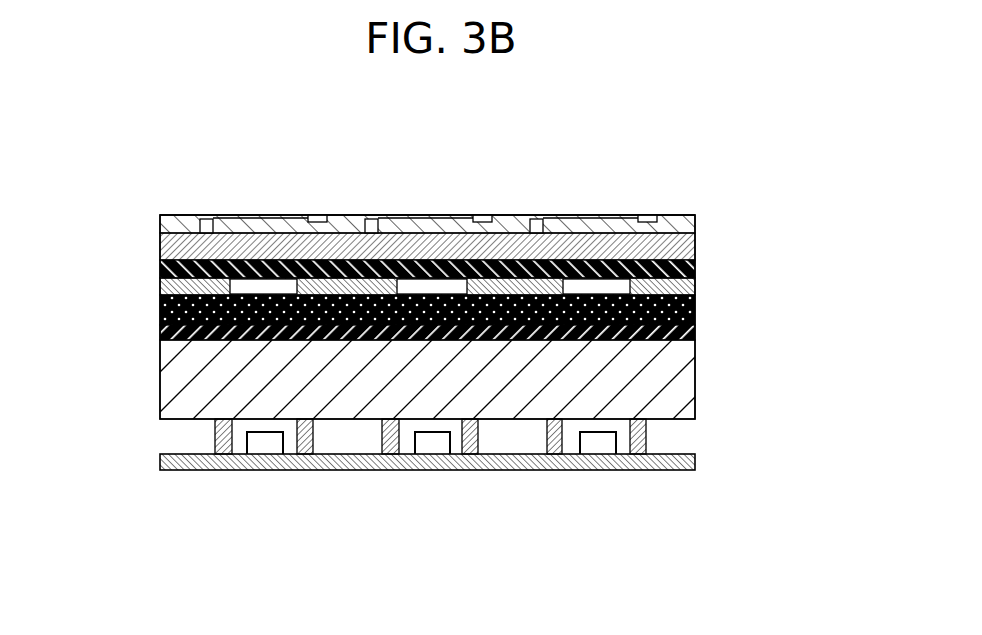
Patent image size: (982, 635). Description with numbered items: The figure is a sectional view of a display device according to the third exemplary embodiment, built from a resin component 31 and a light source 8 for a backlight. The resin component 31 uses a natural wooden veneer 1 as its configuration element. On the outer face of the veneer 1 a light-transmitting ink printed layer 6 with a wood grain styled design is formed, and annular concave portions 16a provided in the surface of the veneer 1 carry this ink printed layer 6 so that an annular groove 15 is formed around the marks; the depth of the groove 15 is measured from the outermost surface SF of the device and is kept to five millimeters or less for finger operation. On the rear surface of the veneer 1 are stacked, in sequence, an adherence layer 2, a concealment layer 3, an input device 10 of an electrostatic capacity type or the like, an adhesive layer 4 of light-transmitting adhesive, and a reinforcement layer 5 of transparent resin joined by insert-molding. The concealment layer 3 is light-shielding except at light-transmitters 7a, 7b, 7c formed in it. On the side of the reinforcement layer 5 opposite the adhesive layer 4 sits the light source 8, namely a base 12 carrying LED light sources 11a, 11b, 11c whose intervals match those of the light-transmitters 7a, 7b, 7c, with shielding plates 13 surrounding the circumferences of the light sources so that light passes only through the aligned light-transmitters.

The resin component 31 is at (135, 220).
The outermost surface SF is at (676, 215).
The light-transmitting ink printed layer 6 is at (680, 227).
The concave portion 16a is at (551, 165).
The groove 15 is at (658, 165).
The veneer 1 is at (695, 247).
The adherence layer 2 is at (695, 272).
The concealment layer 3 is at (695, 288).
The light-transmitter 7a is at (260, 288).
The light-transmitter 7b is at (430, 288).
The light-transmitter 7c is at (595, 288).
The input device 10 is at (695, 310).
The adhesive layer 4 is at (695, 333).
The reinforcement layer 5 is at (688, 372).
The light source 8 is at (132, 420).
The shielding plate 13 is at (212, 442).
The LED light source 11a is at (265, 445).
The LED light source 11b is at (433, 445).
The LED light source 11c is at (596, 445).
The base 12 is at (695, 462).